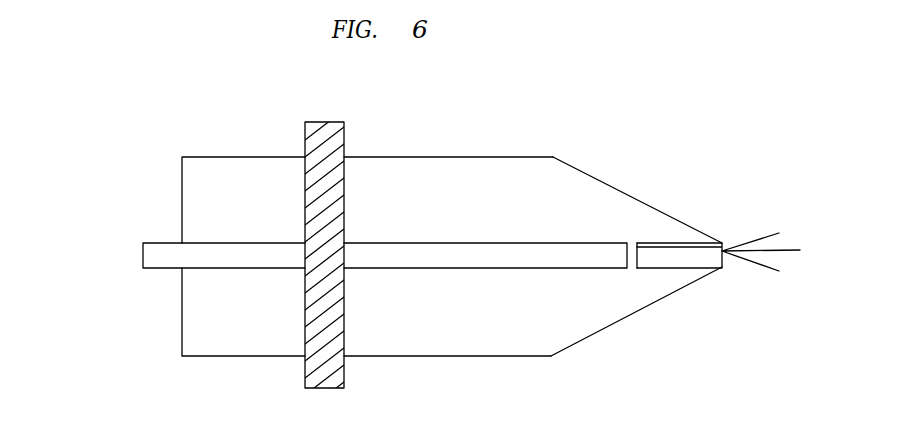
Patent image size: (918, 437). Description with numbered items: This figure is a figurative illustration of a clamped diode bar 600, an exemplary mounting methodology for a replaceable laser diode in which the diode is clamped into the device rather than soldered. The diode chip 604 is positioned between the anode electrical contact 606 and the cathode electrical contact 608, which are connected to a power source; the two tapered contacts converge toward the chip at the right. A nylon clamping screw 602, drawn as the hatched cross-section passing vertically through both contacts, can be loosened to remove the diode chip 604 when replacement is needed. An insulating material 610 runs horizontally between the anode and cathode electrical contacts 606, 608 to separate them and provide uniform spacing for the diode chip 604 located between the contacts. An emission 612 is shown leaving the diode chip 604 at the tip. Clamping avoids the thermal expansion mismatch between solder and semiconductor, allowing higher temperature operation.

The clamped diode bar 600 is at (367, 225).
The nylon clamping screw 602 is at (309, 388).
The diode chip 604 is at (724, 269).
The anode electrical contact 606 is at (565, 162).
The cathode electrical contact 608 is at (637, 312).
The insulating material 610 is at (158, 270).
The emission 612 is at (795, 238).